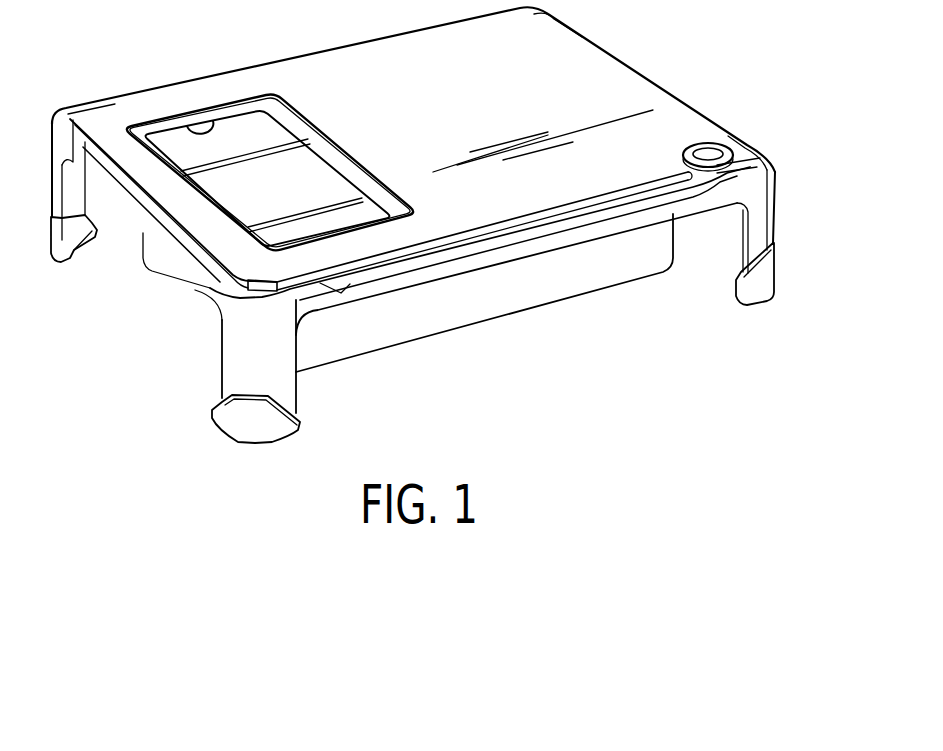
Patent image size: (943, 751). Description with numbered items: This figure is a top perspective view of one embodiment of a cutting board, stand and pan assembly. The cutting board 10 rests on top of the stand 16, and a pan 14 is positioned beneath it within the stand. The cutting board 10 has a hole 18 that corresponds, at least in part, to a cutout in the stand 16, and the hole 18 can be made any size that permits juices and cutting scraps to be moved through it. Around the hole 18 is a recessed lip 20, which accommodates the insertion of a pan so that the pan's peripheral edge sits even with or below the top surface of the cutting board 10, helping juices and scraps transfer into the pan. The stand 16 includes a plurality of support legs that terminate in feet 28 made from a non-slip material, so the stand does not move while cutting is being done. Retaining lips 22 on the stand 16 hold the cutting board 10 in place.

The cutting board 10 is at (610, 80).
The pan 14 is at (500, 293).
The stand 16 is at (764, 208).
The hole 18 is at (303, 180).
The recessed lip 20 is at (214, 130).
The retaining lip 22 is at (762, 143).
The foot 28 is at (767, 280).